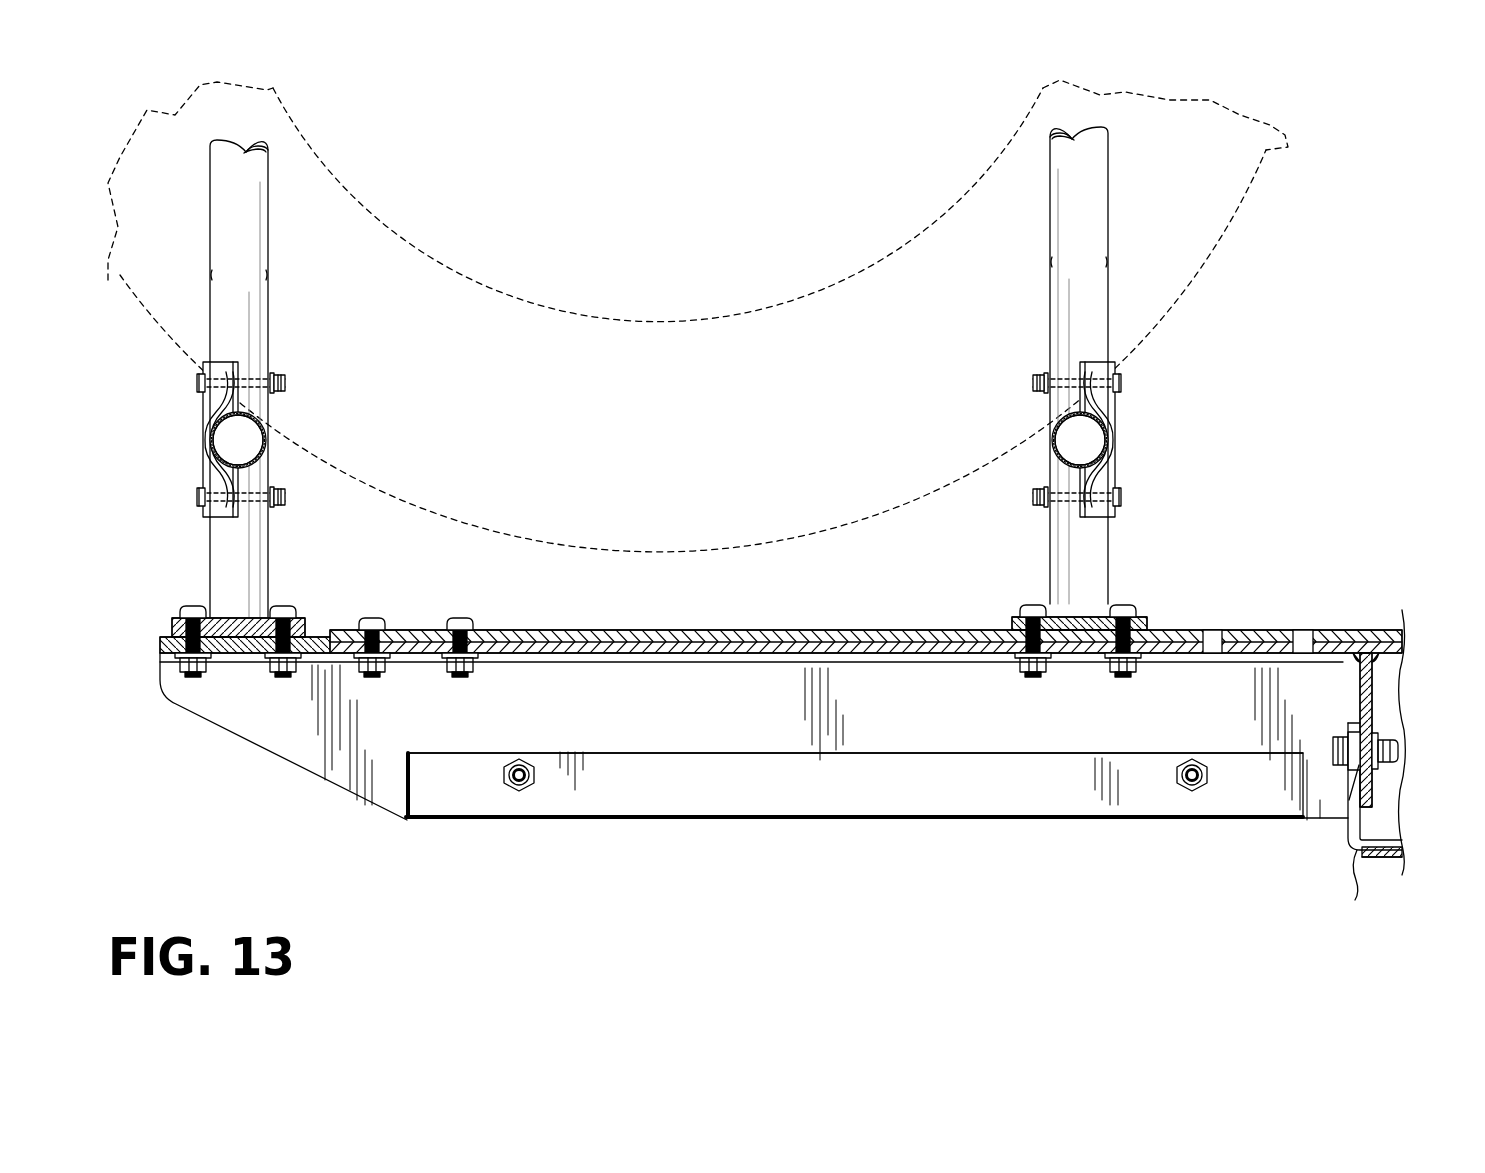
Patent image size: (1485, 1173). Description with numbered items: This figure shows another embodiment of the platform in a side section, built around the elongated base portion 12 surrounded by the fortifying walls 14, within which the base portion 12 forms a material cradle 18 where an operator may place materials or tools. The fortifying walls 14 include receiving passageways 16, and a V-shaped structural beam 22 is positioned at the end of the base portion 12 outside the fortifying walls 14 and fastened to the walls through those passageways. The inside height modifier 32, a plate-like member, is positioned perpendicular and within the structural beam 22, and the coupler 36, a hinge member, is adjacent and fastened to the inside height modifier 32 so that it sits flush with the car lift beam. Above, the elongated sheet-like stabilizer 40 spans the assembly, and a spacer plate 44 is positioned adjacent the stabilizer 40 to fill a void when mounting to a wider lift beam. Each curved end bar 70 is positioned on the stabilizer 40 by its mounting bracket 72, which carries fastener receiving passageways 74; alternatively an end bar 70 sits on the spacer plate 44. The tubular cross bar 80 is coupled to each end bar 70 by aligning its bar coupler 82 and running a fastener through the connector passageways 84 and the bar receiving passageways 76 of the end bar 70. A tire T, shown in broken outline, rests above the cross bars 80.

The base portion 12 is at (1290, 812).
The fortifying walls 14 is at (935, 820).
The receiving passageways 16 is at (513, 788).
The material cradle 18 is at (688, 797).
The structural beams 22 is at (315, 775).
The inside height modifier 32 is at (1375, 695).
The coupler 36 is at (1365, 862).
The stabilizer 40 is at (1270, 630).
The spacer plate 44 is at (231, 640).
The end bar 70 is at (210, 165).
The mounting bracket 72 is at (172, 626).
The fastener receiving passageways 74 is at (284, 617).
The bar receiving passageways 76 is at (258, 383).
The cross bar 80 is at (258, 458).
The bar coupler 82 is at (222, 420).
The connector passageways 84 is at (200, 497).
The tire T is at (660, 325).